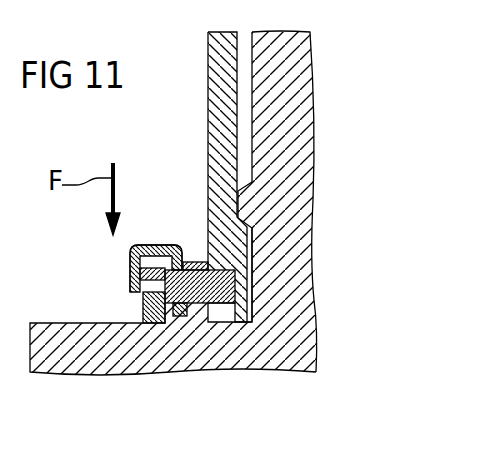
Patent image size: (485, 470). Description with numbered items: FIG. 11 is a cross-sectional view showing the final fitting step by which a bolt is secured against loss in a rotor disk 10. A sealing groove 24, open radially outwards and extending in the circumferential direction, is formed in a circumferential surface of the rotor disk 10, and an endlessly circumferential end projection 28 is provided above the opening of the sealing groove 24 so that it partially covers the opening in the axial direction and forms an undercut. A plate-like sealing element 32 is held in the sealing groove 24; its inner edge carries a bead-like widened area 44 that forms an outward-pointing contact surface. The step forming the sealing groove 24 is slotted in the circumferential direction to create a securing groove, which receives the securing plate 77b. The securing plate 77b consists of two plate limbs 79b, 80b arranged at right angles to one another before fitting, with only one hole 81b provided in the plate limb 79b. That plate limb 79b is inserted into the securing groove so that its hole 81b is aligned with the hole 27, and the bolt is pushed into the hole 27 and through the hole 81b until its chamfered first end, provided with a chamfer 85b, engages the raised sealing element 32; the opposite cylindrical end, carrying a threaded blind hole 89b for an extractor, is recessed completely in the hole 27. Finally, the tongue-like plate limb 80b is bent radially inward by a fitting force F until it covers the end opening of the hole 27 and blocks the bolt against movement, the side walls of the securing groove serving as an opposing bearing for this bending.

The rotor disk 10 is at (302, 60).
The sealing element 32 is at (208, 119).
The end projection 28 is at (242, 197).
The widened area 44 is at (240, 243).
The sealing groove 24 is at (245, 303).
The securing plate 77b is at (150, 248).
The plate limb 80b is at (130, 280).
The blind hole 89b is at (147, 312).
The plate limb 79b is at (178, 316).
The hole 81b is at (195, 292).
The hole 27 is at (205, 306).
The chamfer 85b is at (245, 300).